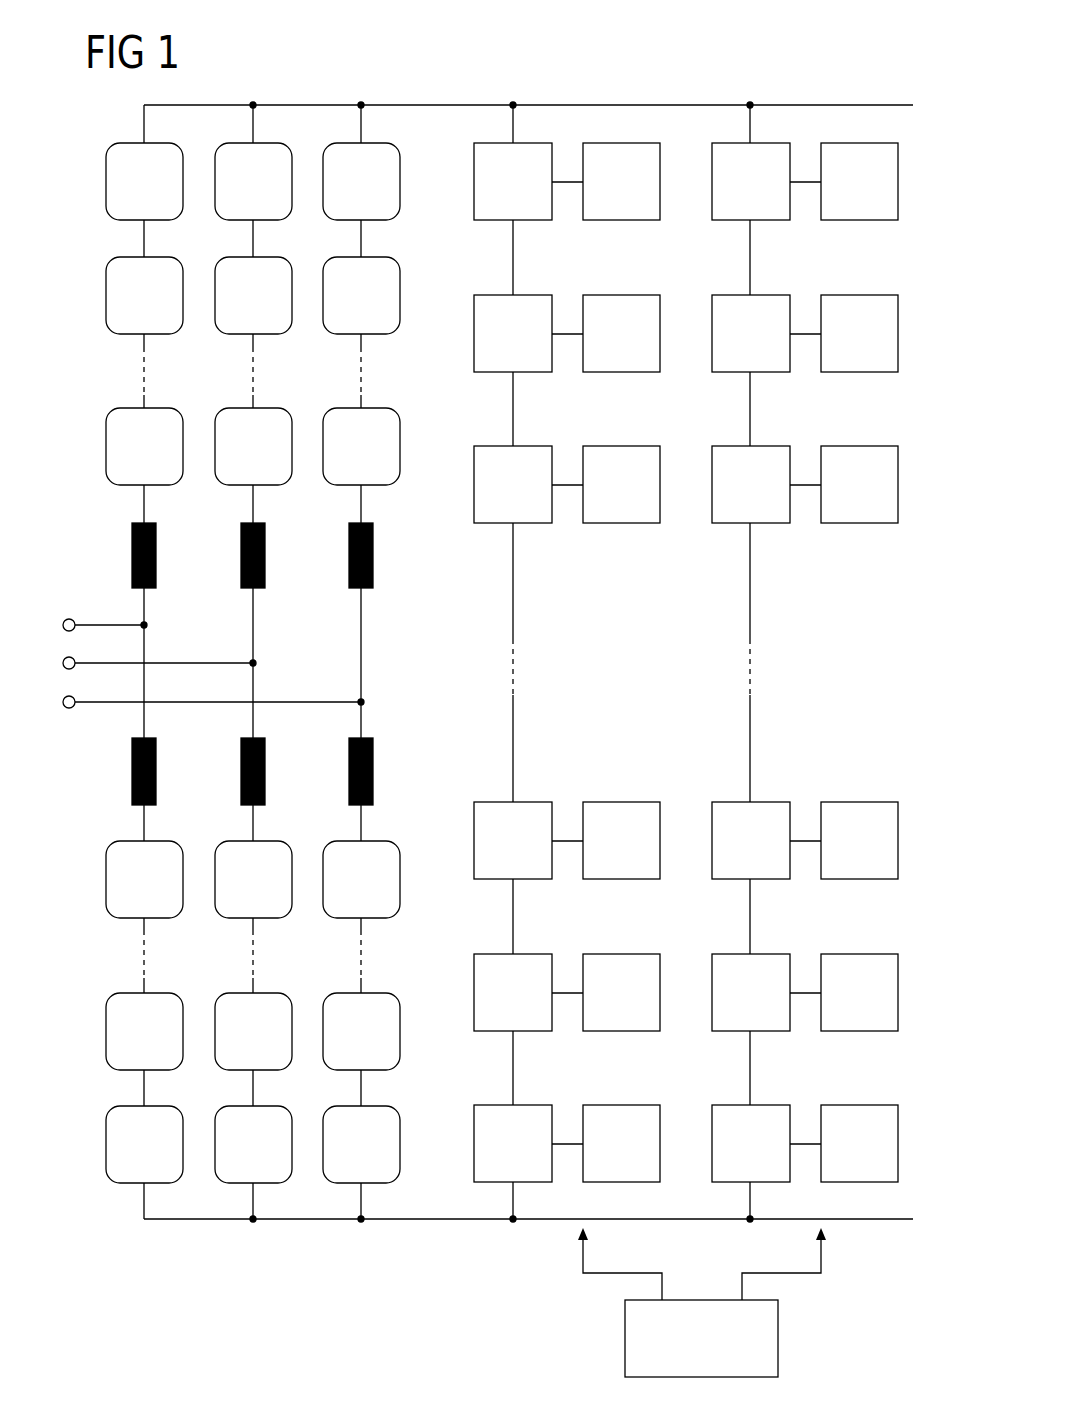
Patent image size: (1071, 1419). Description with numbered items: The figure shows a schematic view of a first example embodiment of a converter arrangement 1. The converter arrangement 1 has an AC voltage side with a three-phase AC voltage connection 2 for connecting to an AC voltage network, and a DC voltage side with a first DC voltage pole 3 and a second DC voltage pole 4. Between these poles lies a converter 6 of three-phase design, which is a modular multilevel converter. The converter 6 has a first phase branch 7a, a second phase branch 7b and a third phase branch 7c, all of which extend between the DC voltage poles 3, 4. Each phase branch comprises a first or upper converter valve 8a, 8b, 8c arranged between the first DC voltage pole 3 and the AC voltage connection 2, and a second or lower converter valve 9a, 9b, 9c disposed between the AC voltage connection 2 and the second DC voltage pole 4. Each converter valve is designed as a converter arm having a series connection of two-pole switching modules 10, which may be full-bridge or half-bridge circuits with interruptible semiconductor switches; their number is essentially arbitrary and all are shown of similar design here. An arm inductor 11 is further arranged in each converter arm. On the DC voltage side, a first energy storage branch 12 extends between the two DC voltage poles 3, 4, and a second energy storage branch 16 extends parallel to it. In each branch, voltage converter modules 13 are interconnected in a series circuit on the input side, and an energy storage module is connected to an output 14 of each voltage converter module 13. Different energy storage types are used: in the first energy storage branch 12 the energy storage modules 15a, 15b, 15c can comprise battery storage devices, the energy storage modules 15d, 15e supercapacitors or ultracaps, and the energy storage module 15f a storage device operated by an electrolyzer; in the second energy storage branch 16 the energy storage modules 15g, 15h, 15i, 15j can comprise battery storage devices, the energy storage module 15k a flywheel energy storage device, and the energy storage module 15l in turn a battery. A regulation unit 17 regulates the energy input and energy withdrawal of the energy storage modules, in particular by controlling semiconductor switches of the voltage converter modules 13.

The converter arrangement 1 is at (318, 84).
The three-phase AC voltage connection 2 is at (48, 611).
The first DC voltage pole 3 is at (452, 105).
The second DC voltage pole 4 is at (455, 1221).
The converter 6 is at (70, 216).
The first phase branch 7a is at (144, 132).
The second phase branch 7b is at (253, 132).
The third phase branch 7c is at (361, 132).
The first converter valve 8a is at (144, 508).
The first converter valve 8b is at (253, 508).
The first converter valve 8c is at (361, 508).
The second converter valve 9a is at (144, 823).
The second converter valve 9b is at (253, 823).
The second converter valve 9c is at (361, 823).
The switching module 10 is at (378, 1159).
The arm inductor 11 is at (401, 770).
The first energy storage branch 12 is at (572, 126).
The voltage converter module 13 is at (767, 1158).
The output 14 is at (805, 1144).
The energy storage module 15a is at (600, 196).
The energy storage module 15b is at (600, 348).
The energy storage module 15c is at (600, 499).
The energy storage module 15d is at (600, 855).
The energy storage module 15e is at (600, 1007).
The energy storage module 15f is at (600, 1158).
The energy storage module 15g is at (838, 196).
The energy storage module 15h is at (838, 348).
The energy storage module 15i is at (838, 499).
The energy storage module 15j is at (838, 855).
The energy storage module 15k is at (838, 1007).
The energy storage module 15l is at (838, 1158).
The second energy storage branch 16 is at (810, 126).
The regulation unit 17 is at (685, 1353).